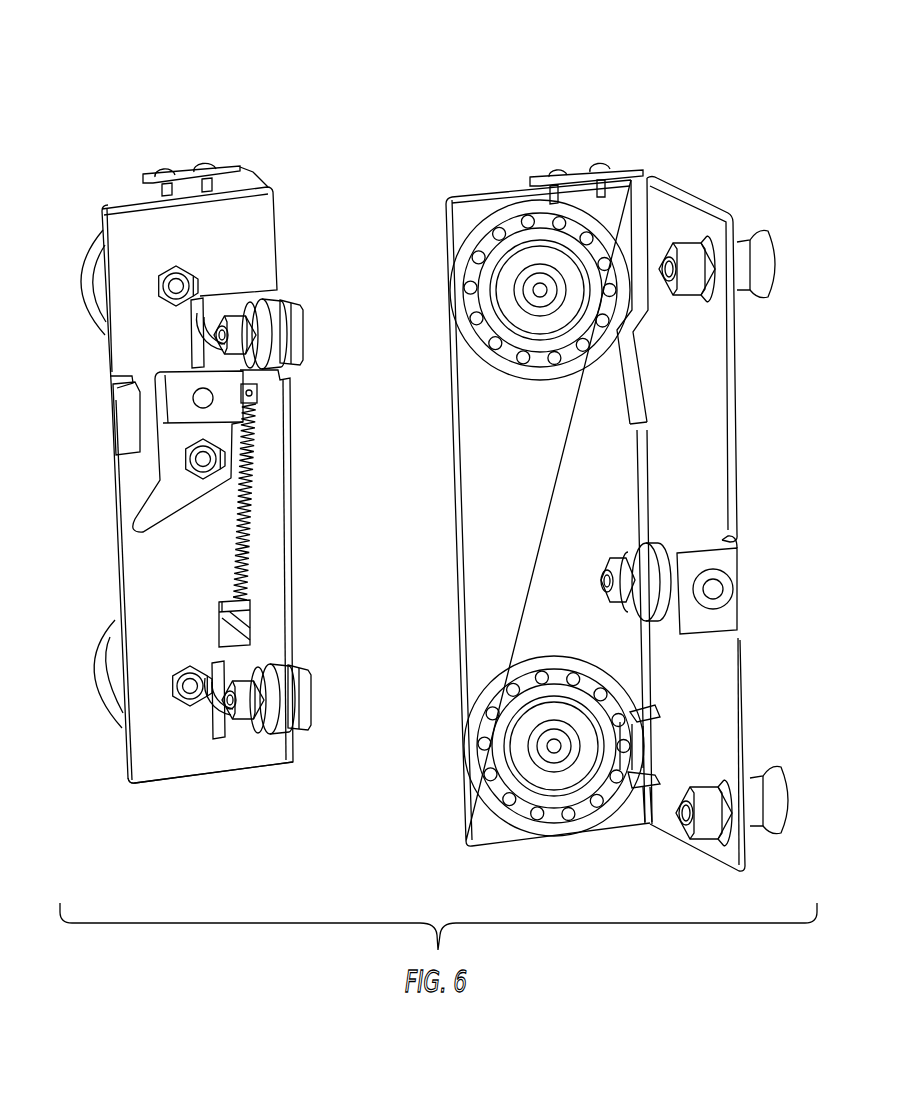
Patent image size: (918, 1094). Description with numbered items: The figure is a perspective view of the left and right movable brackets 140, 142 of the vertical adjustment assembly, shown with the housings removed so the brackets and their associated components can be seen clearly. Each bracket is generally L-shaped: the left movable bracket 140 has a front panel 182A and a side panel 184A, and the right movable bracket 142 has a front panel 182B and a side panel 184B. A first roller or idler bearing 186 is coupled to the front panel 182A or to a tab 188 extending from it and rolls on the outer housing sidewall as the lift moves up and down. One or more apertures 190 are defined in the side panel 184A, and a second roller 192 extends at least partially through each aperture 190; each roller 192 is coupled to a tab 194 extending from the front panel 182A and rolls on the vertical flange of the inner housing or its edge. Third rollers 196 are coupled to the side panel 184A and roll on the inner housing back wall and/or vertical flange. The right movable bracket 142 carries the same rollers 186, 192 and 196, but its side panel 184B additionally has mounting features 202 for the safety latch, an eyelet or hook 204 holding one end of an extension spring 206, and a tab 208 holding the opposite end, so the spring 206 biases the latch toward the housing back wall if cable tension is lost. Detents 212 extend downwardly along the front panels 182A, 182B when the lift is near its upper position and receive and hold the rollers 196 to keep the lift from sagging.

The left movable bracket 140 is at (637, 466).
The right movable bracket 142 is at (377, 468).
The front panel 182A is at (738, 446).
The front panel 182B is at (261, 174).
The side panel 184A is at (550, 838).
The side panel 184B is at (157, 763).
The first roller 186 is at (653, 538).
The tab 188 is at (722, 619).
The aperture 190 is at (234, 742).
The second roller 192 is at (263, 313).
The tab 194 is at (307, 700).
The third roller 196 is at (84, 288).
The mounting feature 202 is at (178, 463).
The eyelet or hook 204 is at (258, 395).
The extension spring 206 is at (253, 456).
The tab 208 is at (250, 609).
The detent 212 is at (189, 165).